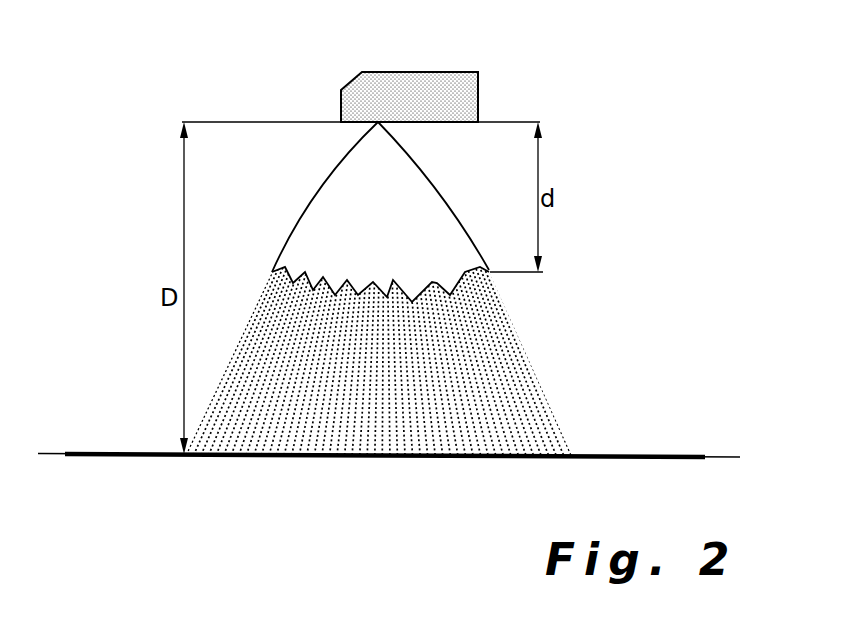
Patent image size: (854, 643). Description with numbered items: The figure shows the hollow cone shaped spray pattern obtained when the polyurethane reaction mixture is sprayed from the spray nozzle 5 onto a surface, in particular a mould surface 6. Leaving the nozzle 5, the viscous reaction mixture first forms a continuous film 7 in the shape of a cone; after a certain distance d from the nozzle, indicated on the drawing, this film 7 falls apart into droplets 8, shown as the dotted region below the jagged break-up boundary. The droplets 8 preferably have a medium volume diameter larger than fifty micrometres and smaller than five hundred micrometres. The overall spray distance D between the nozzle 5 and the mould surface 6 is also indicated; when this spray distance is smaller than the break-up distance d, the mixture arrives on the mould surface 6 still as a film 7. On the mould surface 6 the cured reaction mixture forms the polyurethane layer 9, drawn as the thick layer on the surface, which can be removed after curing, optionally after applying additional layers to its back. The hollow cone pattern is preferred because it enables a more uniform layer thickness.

The spray nozzle 5 is at (417, 78).
The mould surface 6 is at (718, 458).
The film 7 is at (403, 192).
The droplets 8 is at (517, 362).
The polyurethane layer 9 is at (633, 455).